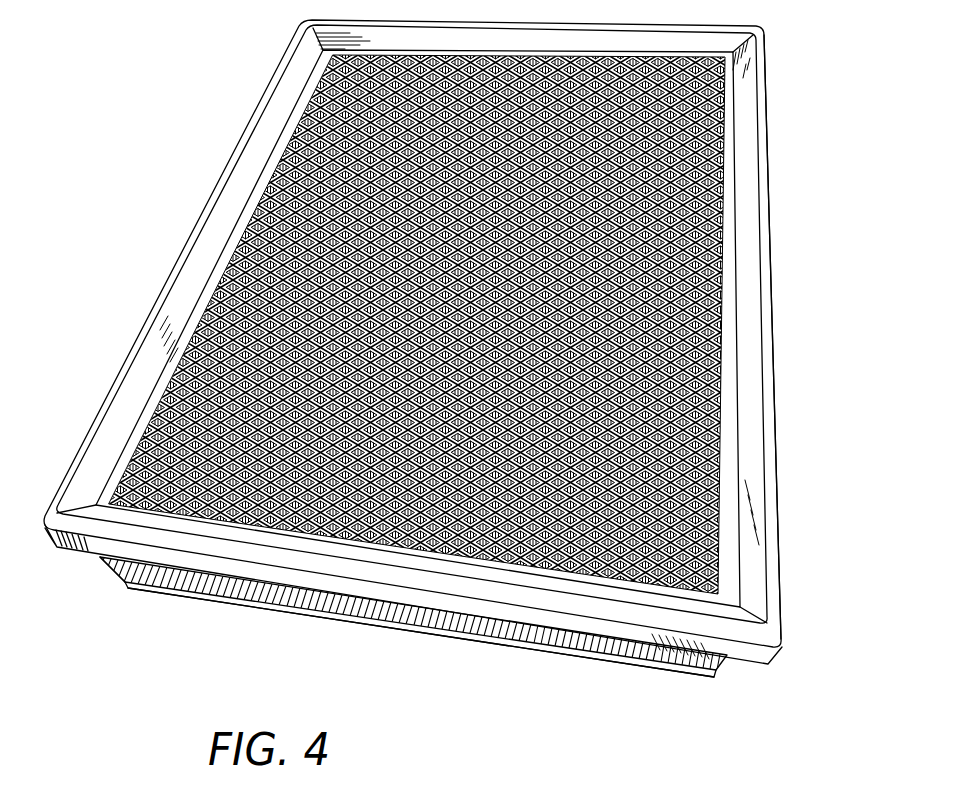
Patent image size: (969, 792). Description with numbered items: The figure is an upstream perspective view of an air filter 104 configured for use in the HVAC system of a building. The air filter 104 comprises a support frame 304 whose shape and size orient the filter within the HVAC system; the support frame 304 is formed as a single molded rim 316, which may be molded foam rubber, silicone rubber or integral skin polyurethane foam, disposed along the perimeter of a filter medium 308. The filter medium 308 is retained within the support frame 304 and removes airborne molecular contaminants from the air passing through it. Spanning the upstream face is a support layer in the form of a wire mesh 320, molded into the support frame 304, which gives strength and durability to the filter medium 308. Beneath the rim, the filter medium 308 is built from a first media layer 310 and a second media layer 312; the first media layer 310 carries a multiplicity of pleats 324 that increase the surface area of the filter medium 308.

The air filter 104 is at (228, 74).
The support frame 304 is at (127, 339).
The filter medium 308 is at (630, 677).
The first media layer 310 is at (218, 584).
The second media layer 312 is at (317, 615).
The molded rim 316 is at (769, 236).
The wire mesh 320 is at (243, 320).
The pleats 324 is at (499, 640).